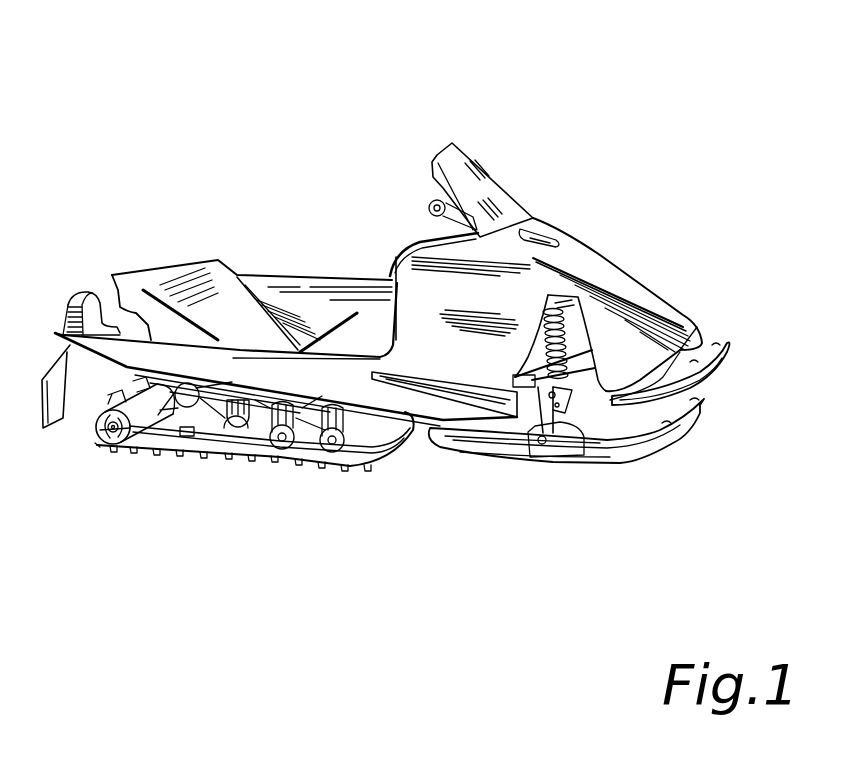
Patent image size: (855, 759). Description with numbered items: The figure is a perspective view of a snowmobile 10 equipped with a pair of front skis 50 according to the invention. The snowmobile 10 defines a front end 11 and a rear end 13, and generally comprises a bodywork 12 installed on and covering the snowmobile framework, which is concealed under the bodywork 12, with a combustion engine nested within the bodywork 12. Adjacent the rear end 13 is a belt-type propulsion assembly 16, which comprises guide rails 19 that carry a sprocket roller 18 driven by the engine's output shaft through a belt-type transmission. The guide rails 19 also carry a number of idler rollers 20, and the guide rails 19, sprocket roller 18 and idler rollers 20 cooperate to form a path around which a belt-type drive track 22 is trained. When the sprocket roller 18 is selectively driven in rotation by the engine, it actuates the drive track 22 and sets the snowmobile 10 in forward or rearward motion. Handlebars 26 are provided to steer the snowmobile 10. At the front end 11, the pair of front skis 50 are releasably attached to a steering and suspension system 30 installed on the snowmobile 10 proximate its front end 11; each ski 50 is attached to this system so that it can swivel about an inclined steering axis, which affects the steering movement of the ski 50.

The snowmobile 10 is at (537, 109).
The front end 11 is at (694, 335).
The bodywork 12 is at (605, 273).
The rear end 13 is at (68, 331).
The belt-type propulsion assembly 16 is at (187, 455).
The sprocket roller 18 is at (98, 438).
The guide rails 19 is at (373, 434).
The idler rollers 20 is at (327, 447).
The belt-type drive track 22 is at (153, 454).
The handlebars 26 is at (430, 205).
The steering and suspension system 30 is at (564, 407).
The front skis 50 is at (728, 345).